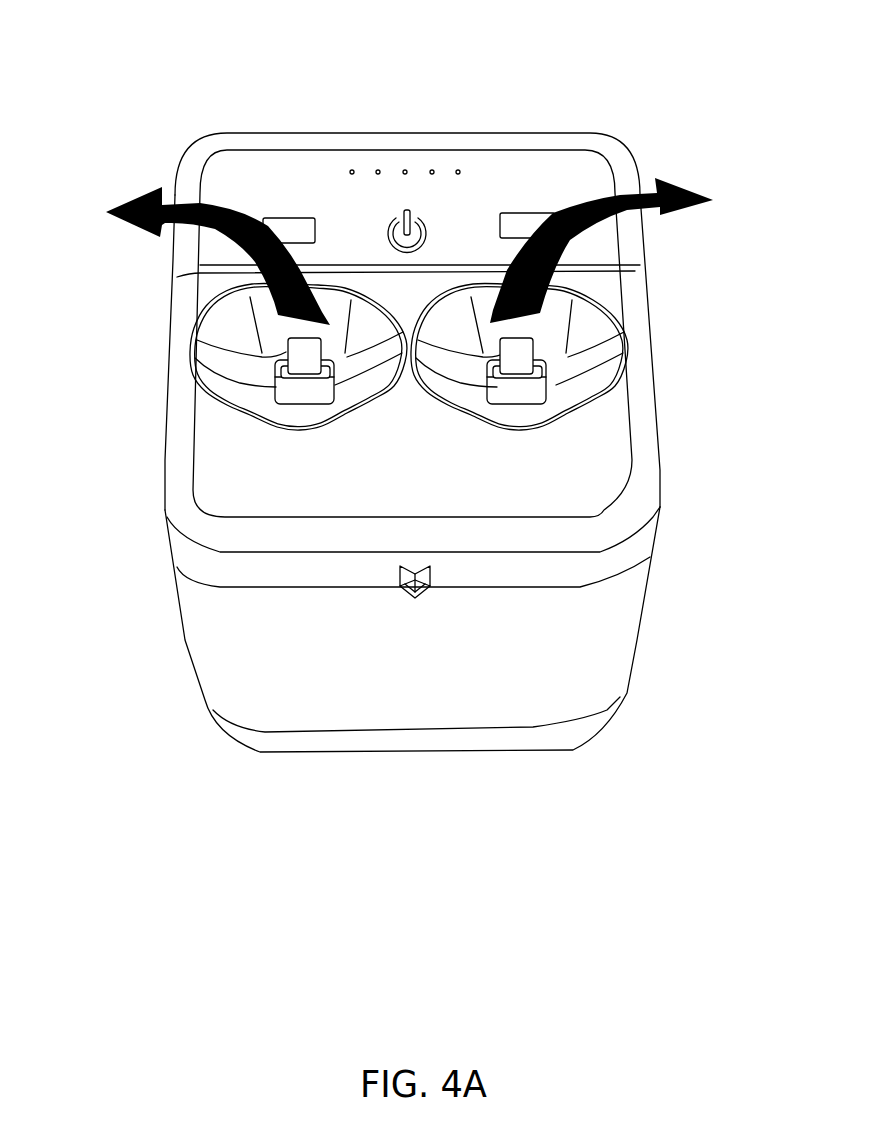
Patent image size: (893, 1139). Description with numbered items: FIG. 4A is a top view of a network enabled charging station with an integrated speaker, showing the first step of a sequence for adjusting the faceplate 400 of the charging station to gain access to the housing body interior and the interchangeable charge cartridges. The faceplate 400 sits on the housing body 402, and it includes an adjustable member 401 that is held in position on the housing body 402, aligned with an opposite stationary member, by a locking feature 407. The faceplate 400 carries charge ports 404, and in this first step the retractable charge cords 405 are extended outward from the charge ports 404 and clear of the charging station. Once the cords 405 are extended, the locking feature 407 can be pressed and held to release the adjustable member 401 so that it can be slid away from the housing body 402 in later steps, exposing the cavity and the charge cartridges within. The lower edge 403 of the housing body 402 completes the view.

The faceplate 400 is at (445, 63).
The adjustable member 401 is at (587, 163).
The housing body 402 is at (218, 613).
The bottom rim 403 is at (578, 733).
The charge port 404 is at (610, 318).
The charge cord 405 is at (625, 368).
The locking feature 407 is at (422, 597).